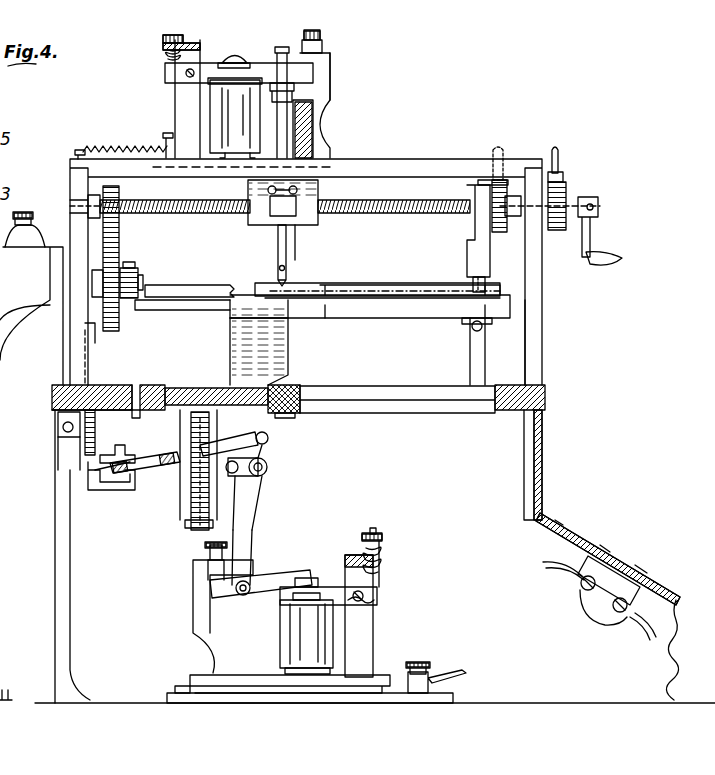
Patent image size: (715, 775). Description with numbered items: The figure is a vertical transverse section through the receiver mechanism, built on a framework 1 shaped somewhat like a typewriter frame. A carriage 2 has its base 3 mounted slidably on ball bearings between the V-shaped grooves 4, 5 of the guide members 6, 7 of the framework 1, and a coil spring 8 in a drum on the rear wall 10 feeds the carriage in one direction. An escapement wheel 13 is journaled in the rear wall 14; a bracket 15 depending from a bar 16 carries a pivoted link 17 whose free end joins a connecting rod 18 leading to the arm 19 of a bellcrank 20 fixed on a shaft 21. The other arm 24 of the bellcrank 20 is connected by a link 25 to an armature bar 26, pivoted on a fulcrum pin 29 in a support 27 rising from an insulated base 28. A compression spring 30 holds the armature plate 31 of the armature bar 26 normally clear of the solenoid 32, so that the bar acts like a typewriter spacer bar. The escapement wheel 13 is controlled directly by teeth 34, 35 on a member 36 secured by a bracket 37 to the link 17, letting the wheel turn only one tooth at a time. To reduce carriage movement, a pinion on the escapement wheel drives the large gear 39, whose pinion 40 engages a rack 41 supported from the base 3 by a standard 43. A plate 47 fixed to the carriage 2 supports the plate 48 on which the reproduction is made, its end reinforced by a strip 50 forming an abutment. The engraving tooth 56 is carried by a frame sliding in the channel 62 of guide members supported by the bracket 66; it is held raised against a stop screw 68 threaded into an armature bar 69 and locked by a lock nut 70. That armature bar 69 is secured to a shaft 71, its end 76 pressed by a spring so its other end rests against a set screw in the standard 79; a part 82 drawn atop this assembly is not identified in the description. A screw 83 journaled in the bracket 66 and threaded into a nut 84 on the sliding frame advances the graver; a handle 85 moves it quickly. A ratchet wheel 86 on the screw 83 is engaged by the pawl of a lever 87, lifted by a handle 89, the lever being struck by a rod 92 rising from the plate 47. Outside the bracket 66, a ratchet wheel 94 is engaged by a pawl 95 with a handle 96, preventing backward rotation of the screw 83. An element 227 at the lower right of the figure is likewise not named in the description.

The framework 1 is at (554, 333).
The carriage 2 is at (299, 337).
The base 3 is at (218, 387).
The V-shaped groove 4 is at (158, 384).
The V-shaped groove 5 is at (282, 384).
The guide member 6 is at (146, 418).
The guide member 7 is at (288, 416).
The coil spring 8 is at (190, 524).
The rear wall 10 is at (76, 562).
The escapement wheel 13 is at (88, 338).
The rear wall 14 is at (72, 377).
The bracket 15 is at (47, 437).
The bar 16 is at (55, 398).
The link 17 is at (62, 465).
The connecting rod 18 is at (162, 472).
The arm 19 is at (270, 441).
The bellcrank 20 is at (271, 480).
The shaft 21 is at (268, 465).
The arm 24 is at (248, 472).
The link 25 is at (238, 539).
The armature bar 26 is at (258, 586).
The support 27 is at (362, 637).
The insulated base 28 is at (194, 682).
The fulcrum pin 29 is at (370, 598).
The compression spring 30 is at (383, 572).
The armature plate 31 is at (316, 598).
The solenoid 32 is at (292, 647).
The tooth 34 is at (110, 458).
The tooth 35 is at (98, 453).
The member 36 is at (110, 476).
The bracket 37 is at (120, 492).
The large gear 39 is at (119, 238).
The pinion 40 is at (136, 270).
The rack 41 is at (140, 321).
The standard 43 is at (280, 345).
The plate 47 is at (402, 310).
The plate 48 is at (309, 294).
The strip 50 is at (210, 284).
The engraving tooth 56 is at (276, 288).
The channel 62 is at (420, 163).
The bracket 66 is at (534, 293).
The stop screw 68 is at (285, 132).
The armature bar 69 is at (260, 63).
The lock nut 70 is at (292, 90).
The shaft 71 is at (183, 80).
The end 76 is at (165, 68).
The standard 79 is at (325, 102).
The cap 82 is at (238, 55).
The screw 83 is at (380, 216).
The nut 84 is at (310, 223).
The handle 85 is at (625, 245).
The ratchet wheel 86 is at (497, 230).
The lever 87 is at (466, 258).
The handle 89 is at (501, 149).
The rod 92 is at (486, 285).
The ratchet wheel 94 is at (559, 221).
The pawl 95 is at (565, 170).
The handle 96 is at (560, 150).
The contact bar 227 is at (652, 578).